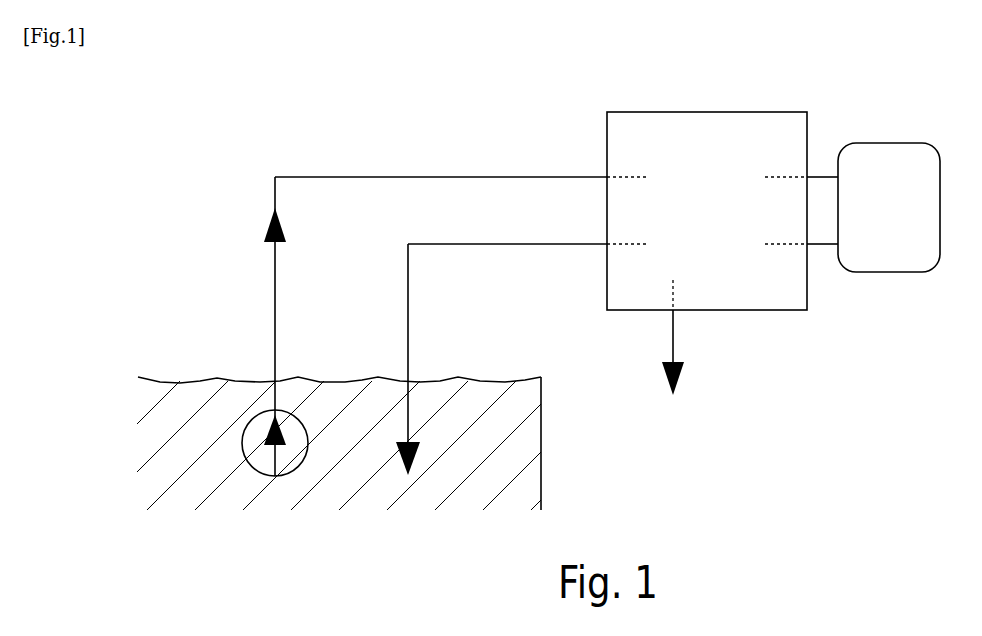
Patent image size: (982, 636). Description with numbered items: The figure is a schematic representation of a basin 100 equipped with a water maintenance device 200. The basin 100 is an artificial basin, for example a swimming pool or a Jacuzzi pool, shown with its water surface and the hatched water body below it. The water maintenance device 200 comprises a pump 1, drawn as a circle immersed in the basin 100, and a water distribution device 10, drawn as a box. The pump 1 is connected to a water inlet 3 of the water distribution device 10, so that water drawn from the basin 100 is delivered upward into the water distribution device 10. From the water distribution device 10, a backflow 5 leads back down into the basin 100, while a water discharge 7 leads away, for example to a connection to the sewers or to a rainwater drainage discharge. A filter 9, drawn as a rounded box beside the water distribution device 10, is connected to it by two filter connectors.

The pump 1 is at (253, 413).
The water inlet 3 is at (320, 177).
The backflow 5 is at (501, 382).
The water discharge 7 is at (674, 375).
The filter 9 is at (873, 207).
The water distribution device 10 is at (707, 211).
The basin 100 is at (112, 345).
The water maintenance device 200 is at (222, 197).